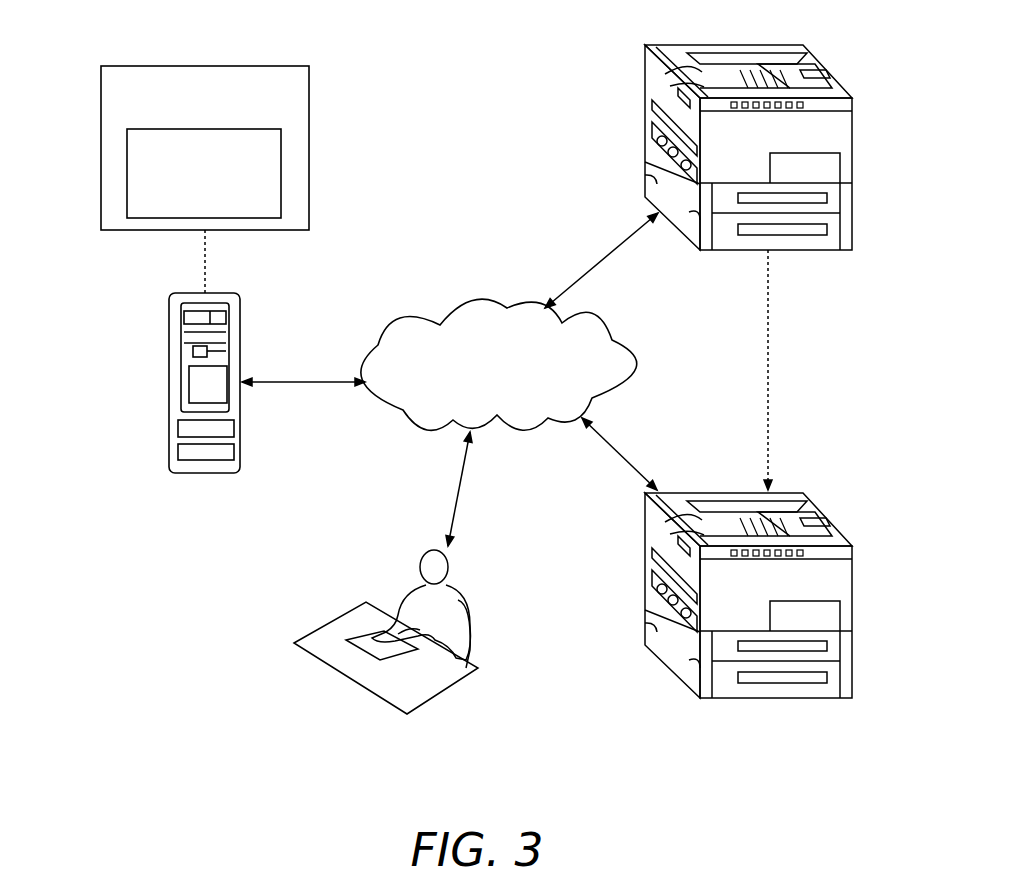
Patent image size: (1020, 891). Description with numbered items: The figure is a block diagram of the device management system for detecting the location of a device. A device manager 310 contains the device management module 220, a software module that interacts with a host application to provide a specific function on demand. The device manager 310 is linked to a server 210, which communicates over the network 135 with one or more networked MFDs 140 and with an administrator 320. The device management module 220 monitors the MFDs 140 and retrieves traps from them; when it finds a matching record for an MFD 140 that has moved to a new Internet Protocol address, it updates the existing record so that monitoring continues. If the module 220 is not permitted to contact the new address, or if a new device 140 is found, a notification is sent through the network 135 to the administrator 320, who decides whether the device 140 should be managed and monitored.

The device manager 310 is at (241, 66).
The device management module 220 is at (282, 173).
The server 210 is at (170, 378).
The network 135 is at (475, 300).
The MFD 140 is at (755, 43).
The administrator 320 is at (466, 630).